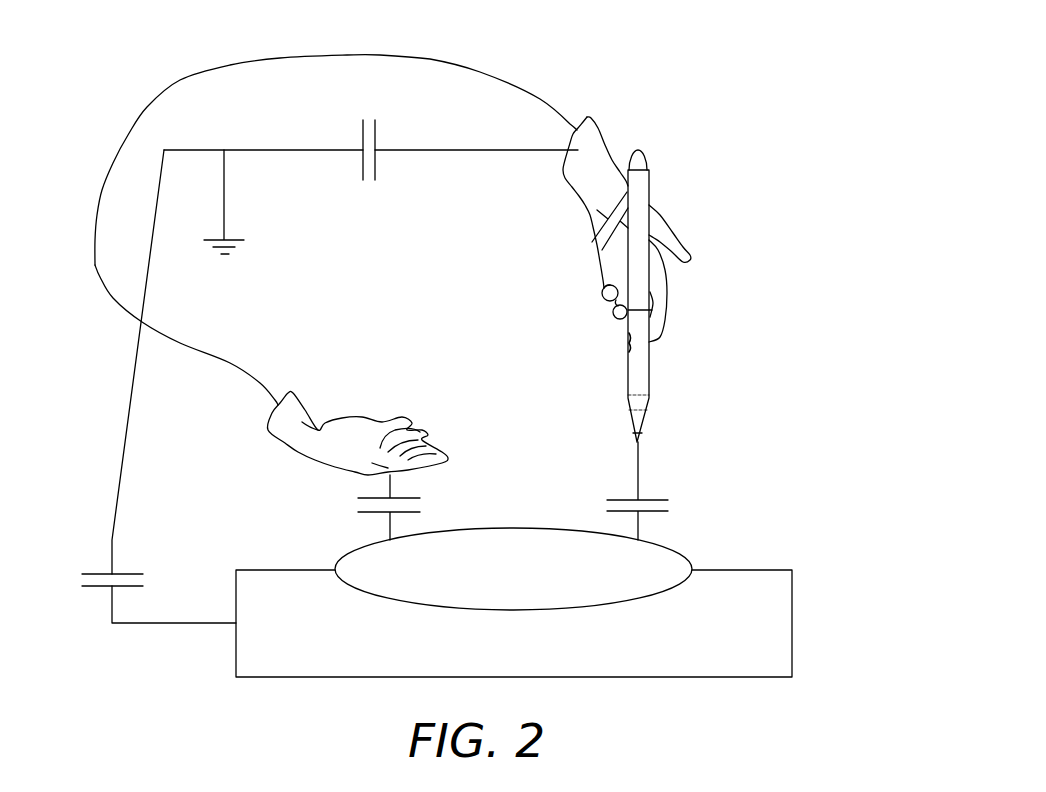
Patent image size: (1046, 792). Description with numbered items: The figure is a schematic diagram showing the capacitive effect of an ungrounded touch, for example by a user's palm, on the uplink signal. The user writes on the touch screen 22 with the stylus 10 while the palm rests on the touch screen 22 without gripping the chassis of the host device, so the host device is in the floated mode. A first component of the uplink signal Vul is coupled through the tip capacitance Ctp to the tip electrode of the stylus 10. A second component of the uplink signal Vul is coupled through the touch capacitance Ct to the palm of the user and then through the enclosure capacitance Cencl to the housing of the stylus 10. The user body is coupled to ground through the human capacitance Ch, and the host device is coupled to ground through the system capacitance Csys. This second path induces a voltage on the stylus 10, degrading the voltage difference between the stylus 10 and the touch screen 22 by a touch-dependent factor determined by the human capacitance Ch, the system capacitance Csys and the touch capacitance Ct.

The stylus 10 is at (649, 180).
The touch screen 22 is at (792, 578).
The human capacitance Ch is at (371, 170).
The system capacitance Csys is at (159, 386).
The touch capacitance Ct is at (374, 507).
The tip capacitance Ctp is at (659, 491).
The enclosure capacitance Cencl is at (579, 226).
The uplink signal Vul is at (513, 569).